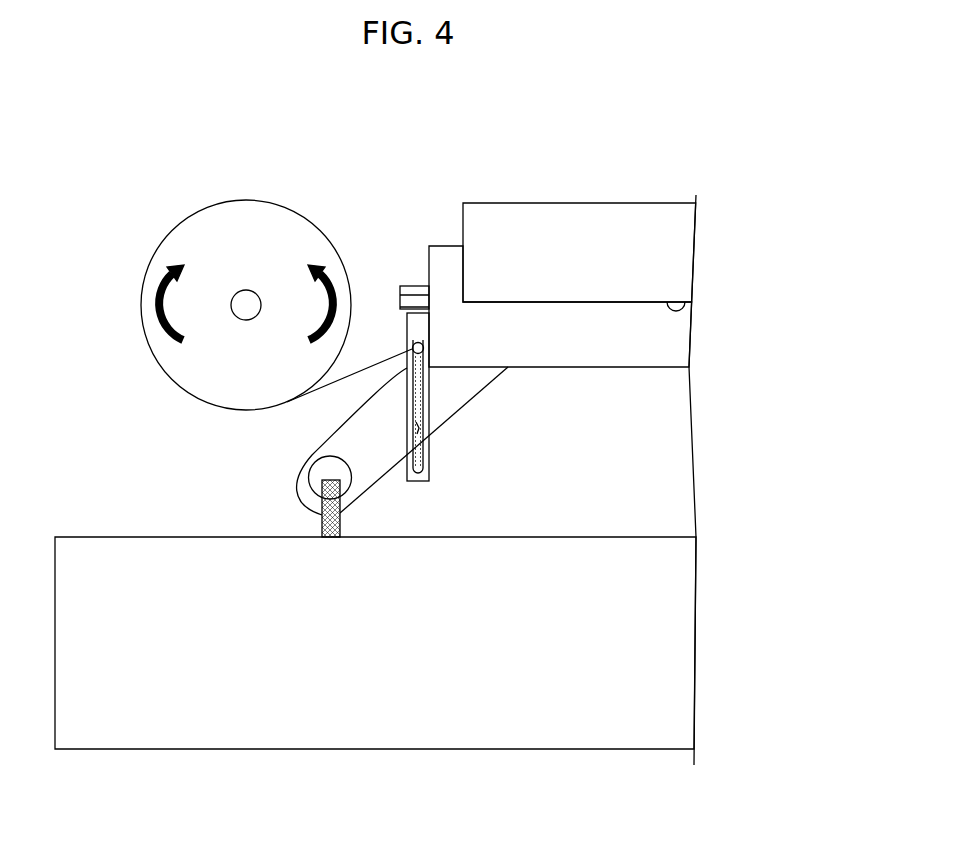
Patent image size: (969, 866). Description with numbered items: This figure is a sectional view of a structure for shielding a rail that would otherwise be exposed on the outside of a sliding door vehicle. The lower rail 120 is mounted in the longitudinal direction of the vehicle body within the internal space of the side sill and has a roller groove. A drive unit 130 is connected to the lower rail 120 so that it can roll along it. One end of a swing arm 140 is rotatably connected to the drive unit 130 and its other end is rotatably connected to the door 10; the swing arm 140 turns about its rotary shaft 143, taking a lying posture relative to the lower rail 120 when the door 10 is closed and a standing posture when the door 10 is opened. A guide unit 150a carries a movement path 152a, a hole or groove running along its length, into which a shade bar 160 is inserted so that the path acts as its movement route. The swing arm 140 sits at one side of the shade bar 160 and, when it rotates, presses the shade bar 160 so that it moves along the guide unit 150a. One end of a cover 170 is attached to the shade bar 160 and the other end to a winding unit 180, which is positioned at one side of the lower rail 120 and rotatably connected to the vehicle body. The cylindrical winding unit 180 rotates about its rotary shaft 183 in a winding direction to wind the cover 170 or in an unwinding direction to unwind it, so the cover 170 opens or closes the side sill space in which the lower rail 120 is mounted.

The door 10 is at (420, 727).
The lower rail 120 is at (613, 218).
The drive unit 130 is at (667, 337).
The swing arm 140 is at (380, 457).
The rotary shaft of the swing arm 143 is at (687, 311).
The guide unit 150a is at (427, 391).
The movement path 152a is at (421, 428).
The shade bar 160 is at (408, 335).
The cover 170 is at (327, 383).
The winding unit 180 is at (246, 213).
The rotary shaft of the winding unit 183 is at (249, 298).